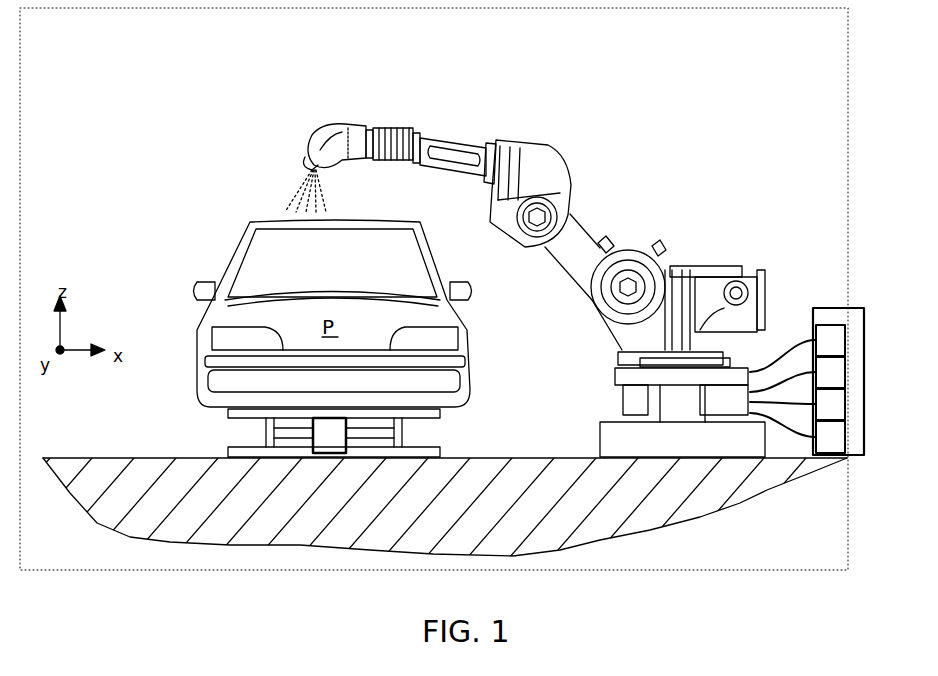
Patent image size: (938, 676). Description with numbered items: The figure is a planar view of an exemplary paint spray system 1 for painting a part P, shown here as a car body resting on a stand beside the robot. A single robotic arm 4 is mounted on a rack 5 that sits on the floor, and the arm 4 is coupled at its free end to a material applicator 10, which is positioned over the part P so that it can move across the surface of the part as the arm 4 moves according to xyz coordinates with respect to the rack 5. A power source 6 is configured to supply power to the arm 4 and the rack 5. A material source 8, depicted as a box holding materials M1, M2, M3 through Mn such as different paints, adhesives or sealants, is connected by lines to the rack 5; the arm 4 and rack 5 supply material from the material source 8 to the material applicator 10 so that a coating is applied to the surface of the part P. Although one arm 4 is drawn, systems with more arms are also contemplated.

The paint spray system 1 is at (300, 72).
The material applicator 10 is at (312, 143).
The robotic arm 4 is at (559, 170).
The power source 6 is at (695, 298).
The rack 5 is at (725, 353).
The material source 8 is at (848, 308).